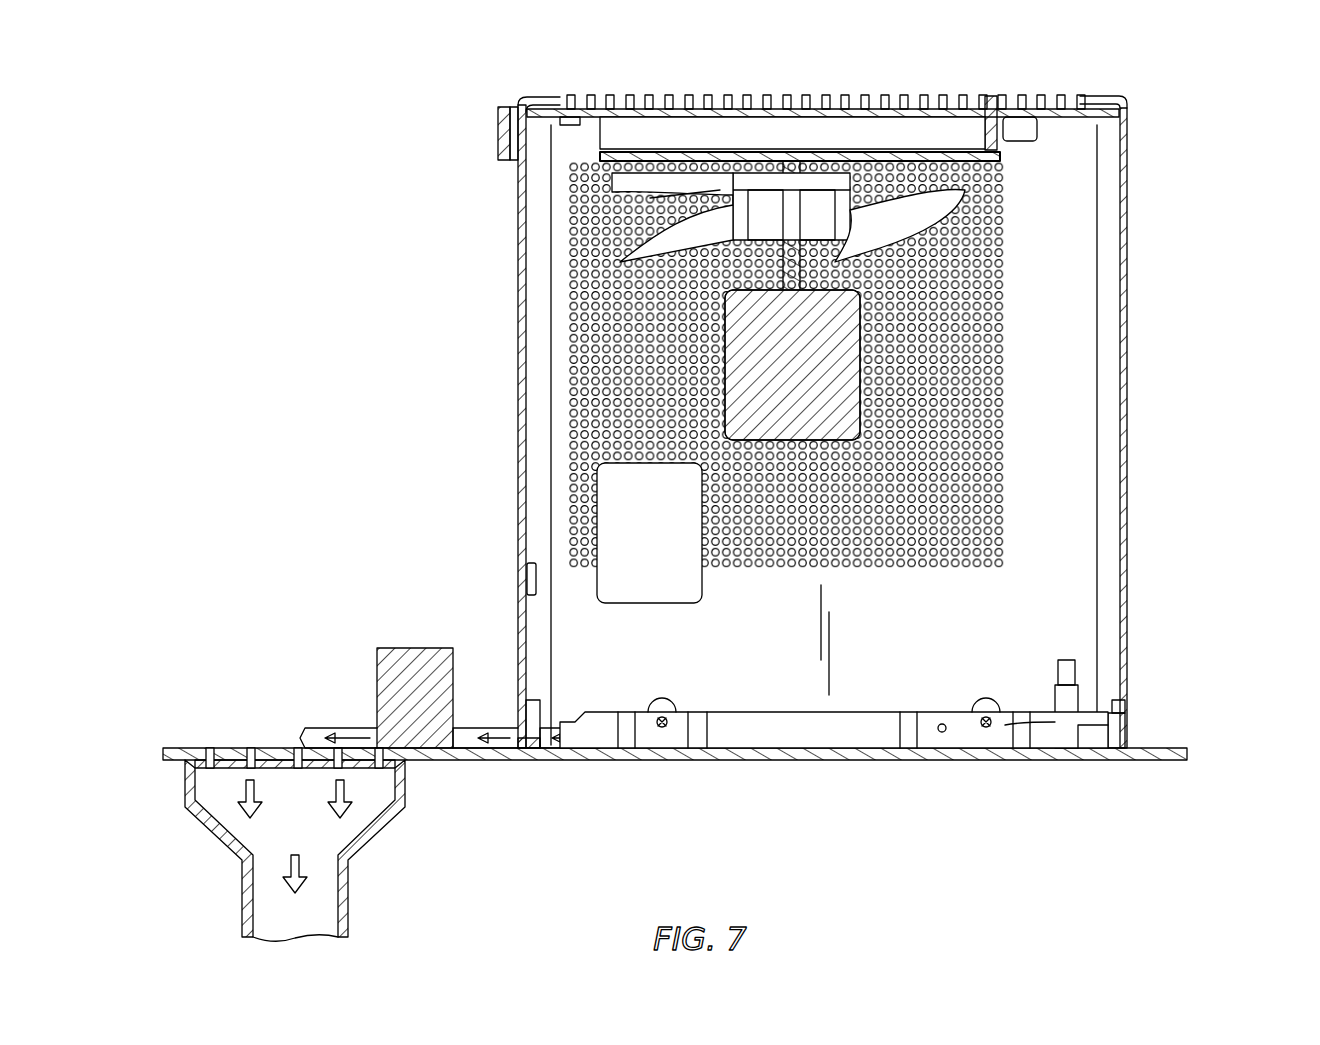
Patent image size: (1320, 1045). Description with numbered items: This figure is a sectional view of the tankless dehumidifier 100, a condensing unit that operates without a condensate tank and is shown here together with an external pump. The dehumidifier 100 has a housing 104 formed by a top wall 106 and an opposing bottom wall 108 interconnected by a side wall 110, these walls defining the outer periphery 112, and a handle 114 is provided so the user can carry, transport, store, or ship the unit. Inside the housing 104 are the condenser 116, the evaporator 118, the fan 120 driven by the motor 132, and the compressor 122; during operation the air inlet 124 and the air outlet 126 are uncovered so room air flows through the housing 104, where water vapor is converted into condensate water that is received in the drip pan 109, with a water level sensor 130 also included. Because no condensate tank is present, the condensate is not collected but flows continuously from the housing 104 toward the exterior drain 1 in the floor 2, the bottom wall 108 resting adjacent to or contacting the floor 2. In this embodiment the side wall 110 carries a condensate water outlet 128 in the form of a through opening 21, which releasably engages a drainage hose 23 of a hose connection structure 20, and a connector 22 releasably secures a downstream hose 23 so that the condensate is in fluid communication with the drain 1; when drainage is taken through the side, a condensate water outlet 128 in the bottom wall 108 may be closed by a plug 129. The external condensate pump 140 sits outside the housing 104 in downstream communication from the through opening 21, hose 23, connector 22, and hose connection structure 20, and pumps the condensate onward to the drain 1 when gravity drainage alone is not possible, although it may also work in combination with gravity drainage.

The drain 1 is at (230, 747).
The floor 2 is at (1180, 747).
The hose connection structure 20 is at (357, 645).
The through opening 21 is at (538, 718).
The connector 22 is at (515, 712).
The hose 23 is at (335, 726).
The dehumidifier 100 is at (433, 155).
The housing 104 is at (1160, 403).
The top wall 106 is at (1088, 103).
The bottom wall 108 is at (750, 745).
The drip pan 109 is at (832, 735).
The side wall 110 is at (518, 275).
The outer periphery 112 is at (1170, 220).
The handle 114 is at (512, 103).
The condenser 116 is at (965, 210).
The evaporator 118 is at (975, 160).
The fan 120 is at (915, 215).
The compressor 122 is at (675, 583).
The air inlet 124 is at (855, 555).
The air outlet 126 is at (1045, 105).
The condensate water outlet 128 is at (528, 762).
The plug 129 is at (585, 757).
The water level sensor 130 is at (1050, 722).
The motor 132 is at (752, 322).
The condensate pump 140 is at (427, 668).